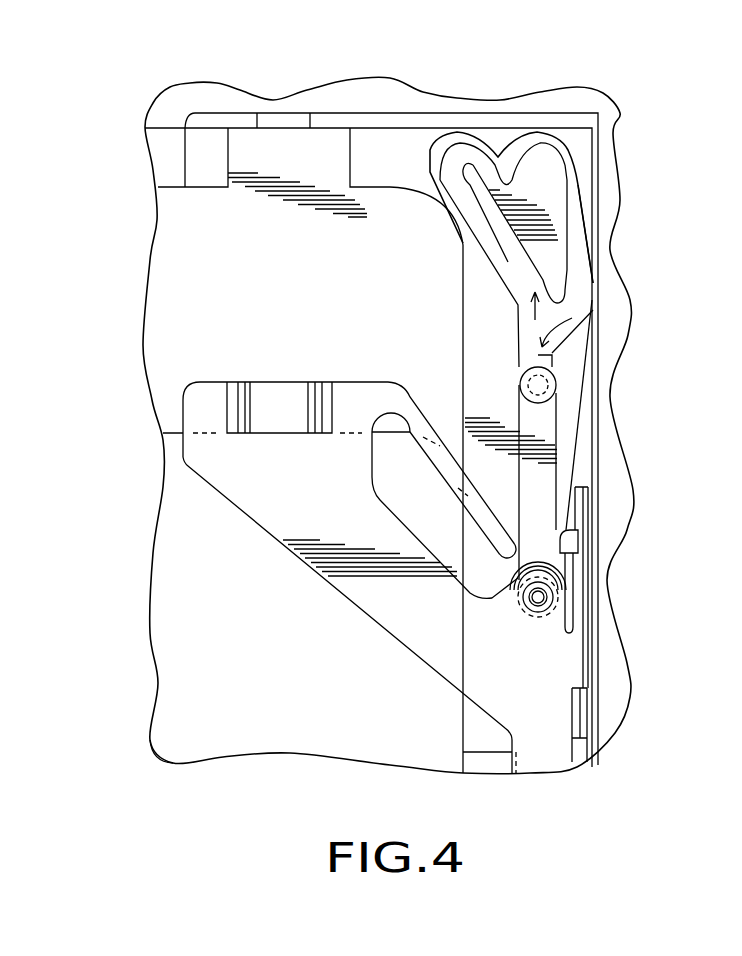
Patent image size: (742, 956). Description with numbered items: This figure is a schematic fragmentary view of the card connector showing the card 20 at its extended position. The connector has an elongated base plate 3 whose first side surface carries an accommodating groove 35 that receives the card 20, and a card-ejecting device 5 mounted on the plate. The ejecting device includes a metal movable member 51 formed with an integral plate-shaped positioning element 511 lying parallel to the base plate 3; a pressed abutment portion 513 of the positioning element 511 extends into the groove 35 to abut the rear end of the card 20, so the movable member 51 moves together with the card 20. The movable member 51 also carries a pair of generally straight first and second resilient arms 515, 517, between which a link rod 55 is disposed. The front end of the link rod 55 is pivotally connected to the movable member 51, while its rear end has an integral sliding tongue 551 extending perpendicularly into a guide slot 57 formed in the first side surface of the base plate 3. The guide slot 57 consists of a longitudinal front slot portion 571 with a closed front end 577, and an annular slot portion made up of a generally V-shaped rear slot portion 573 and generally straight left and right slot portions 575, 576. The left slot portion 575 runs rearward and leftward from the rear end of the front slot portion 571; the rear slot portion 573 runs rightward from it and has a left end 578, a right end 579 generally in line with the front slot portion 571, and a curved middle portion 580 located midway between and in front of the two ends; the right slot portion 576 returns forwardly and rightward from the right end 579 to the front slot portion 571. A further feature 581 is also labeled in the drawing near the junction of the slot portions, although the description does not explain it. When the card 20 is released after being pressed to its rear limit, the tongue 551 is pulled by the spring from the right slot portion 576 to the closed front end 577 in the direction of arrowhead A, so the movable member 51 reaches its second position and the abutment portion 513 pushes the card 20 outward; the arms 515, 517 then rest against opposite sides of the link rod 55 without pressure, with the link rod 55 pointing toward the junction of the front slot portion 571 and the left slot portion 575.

The base plate 3 is at (272, 83).
The card-ejecting device 5 is at (352, 733).
The card 20 is at (225, 677).
The accommodating groove 35 is at (202, 256).
The movable member 51 is at (550, 750).
The link rod 55 is at (540, 473).
The guide slot 57 is at (542, 122).
The positioning element 511 is at (287, 515).
The abutment portion 513 is at (278, 403).
The first resilient arm 515 is at (443, 470).
The second resilient arm 517 is at (577, 593).
The sliding tongue 551 is at (545, 388).
The longitudinal front slot portion 571 is at (538, 357).
The V-shaped rear slot portion 573 is at (497, 167).
The left slot portion 575 is at (510, 257).
The right slot portion 576 is at (565, 225).
The closed front end 577 is at (540, 400).
The left end 578 is at (455, 158).
The right end 579 is at (540, 163).
The curved middle portion 580 is at (508, 177).
The hook 581 is at (570, 300).